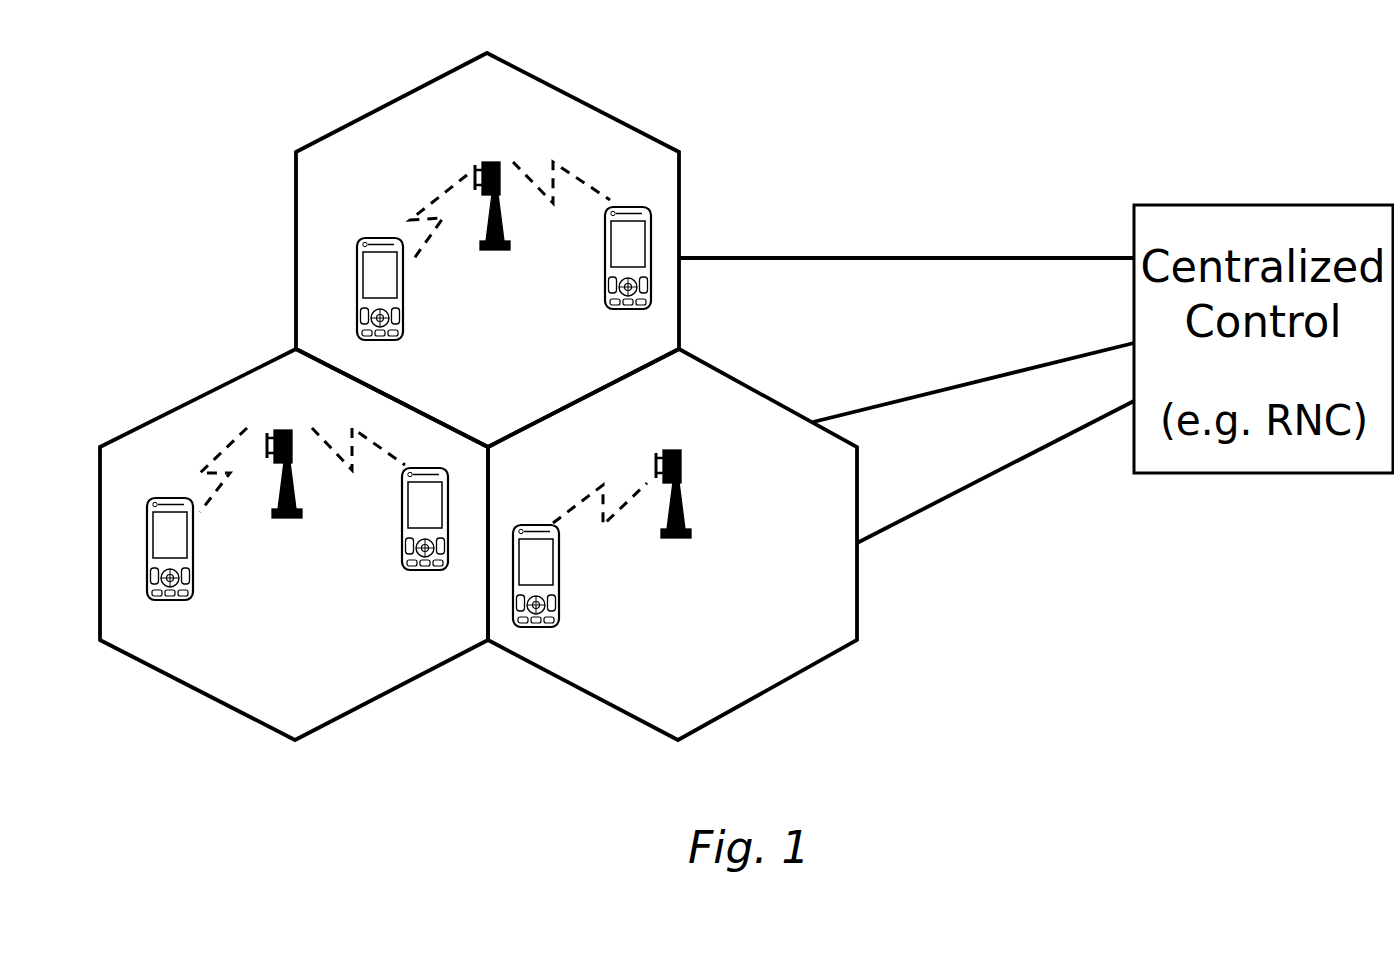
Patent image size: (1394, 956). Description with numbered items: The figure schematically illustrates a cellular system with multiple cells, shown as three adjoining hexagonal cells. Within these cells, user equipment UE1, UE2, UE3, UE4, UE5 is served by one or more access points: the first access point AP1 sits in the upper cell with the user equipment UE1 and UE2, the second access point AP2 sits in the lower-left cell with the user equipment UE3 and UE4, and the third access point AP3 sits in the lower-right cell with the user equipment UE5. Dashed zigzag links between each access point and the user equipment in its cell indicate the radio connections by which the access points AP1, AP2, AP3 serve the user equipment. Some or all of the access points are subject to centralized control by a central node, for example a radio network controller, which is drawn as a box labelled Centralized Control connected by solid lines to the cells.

The access point AP1 is at (498, 148).
The access point AP2 is at (256, 404).
The access point AP3 is at (750, 553).
The user equipment UE1 is at (696, 240).
The user equipment UE2 is at (288, 272).
The user equipment UE3 is at (130, 629).
The user equipment UE4 is at (391, 621).
The user equipment UE5 is at (513, 654).